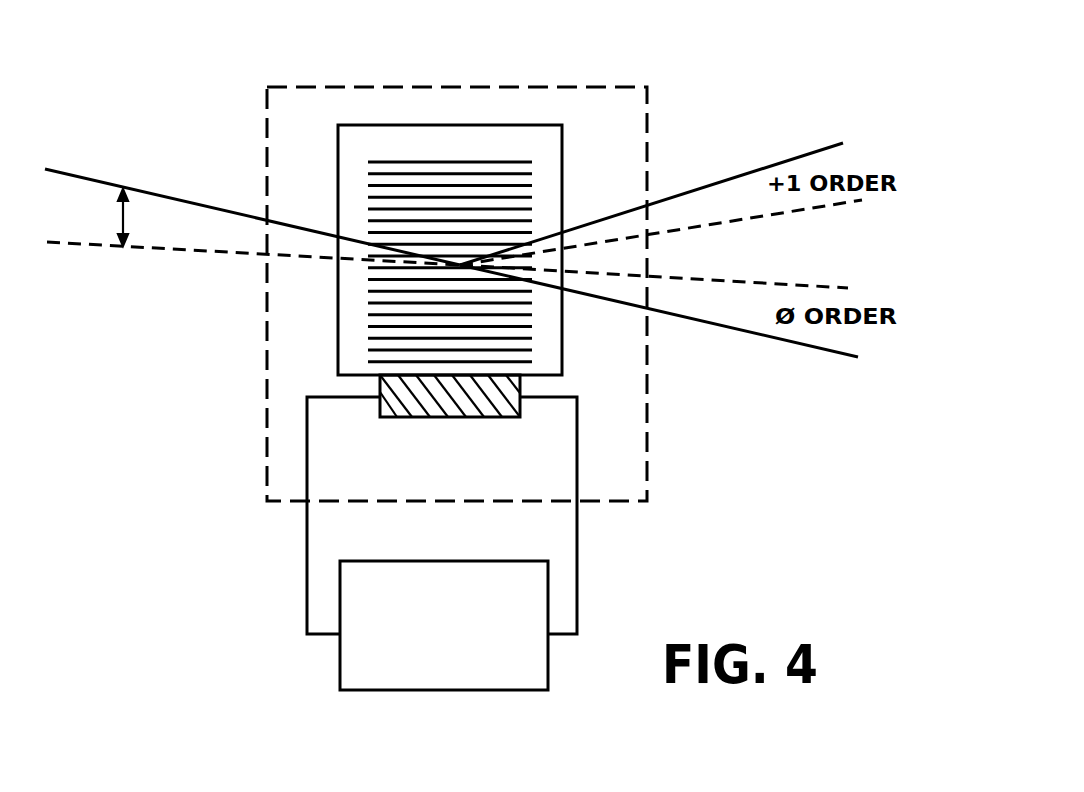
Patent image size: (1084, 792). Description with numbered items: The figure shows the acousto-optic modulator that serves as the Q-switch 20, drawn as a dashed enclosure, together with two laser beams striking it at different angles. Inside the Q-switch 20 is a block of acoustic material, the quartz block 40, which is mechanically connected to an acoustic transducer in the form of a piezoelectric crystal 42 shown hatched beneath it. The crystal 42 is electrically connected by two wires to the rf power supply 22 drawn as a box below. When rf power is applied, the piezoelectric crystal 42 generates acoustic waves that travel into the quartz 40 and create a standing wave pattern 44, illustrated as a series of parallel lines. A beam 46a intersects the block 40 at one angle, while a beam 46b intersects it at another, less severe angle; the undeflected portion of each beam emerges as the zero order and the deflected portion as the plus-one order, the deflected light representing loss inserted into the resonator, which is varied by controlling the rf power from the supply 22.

The Q-switch 20 is at (310, 86).
The quartz block 40 is at (533, 124).
The standing wave pattern 44 is at (373, 292).
The piezoelectric crystal 42 is at (505, 417).
The rf power supply 22 is at (453, 664).
The beam 46a is at (108, 182).
The beam 46b is at (157, 248).